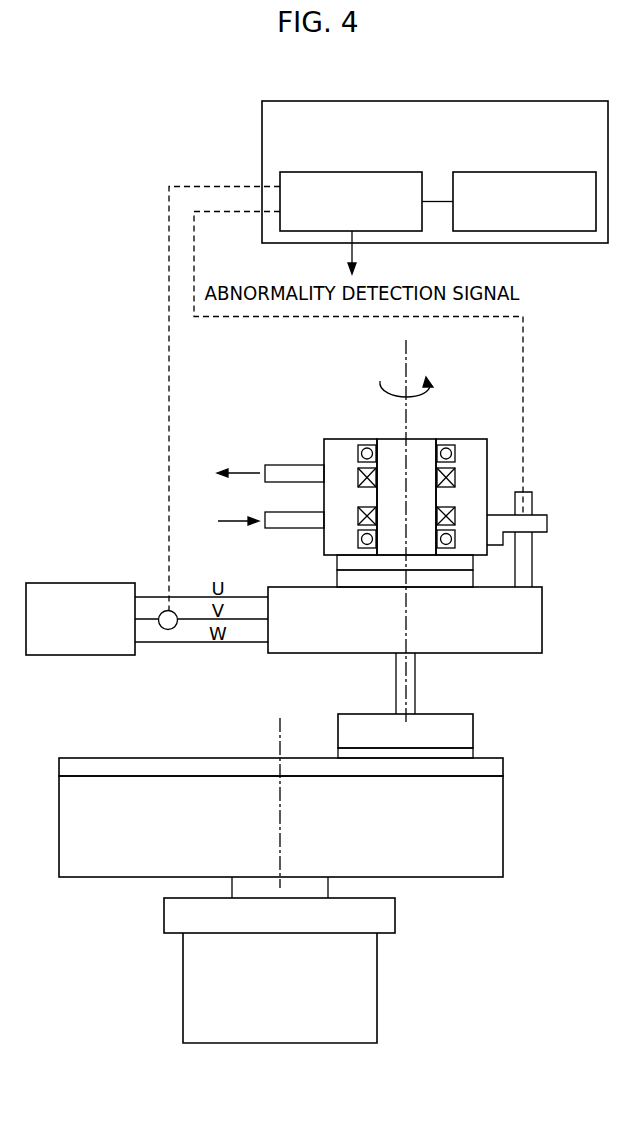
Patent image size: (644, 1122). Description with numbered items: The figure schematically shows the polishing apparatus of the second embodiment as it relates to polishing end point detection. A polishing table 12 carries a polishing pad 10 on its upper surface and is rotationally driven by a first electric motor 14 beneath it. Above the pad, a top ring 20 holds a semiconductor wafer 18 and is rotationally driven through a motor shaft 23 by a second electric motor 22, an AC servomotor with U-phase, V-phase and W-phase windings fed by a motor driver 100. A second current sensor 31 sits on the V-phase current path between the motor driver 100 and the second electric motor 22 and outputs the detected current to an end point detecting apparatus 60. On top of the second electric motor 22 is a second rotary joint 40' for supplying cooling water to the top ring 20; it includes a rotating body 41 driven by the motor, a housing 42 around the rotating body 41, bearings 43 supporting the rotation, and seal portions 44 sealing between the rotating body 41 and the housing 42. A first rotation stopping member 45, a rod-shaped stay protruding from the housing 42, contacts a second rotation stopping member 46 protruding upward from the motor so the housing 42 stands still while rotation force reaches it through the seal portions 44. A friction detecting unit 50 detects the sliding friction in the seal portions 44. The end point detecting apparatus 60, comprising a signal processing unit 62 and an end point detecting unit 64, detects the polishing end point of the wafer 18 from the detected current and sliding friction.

The end point detecting apparatus 60 is at (580, 101).
The signal processing unit 62 is at (353, 172).
The end point detecting unit 64 is at (530, 172).
The motor driver 100 is at (80, 583).
The second current sensor 31 is at (160, 613).
The second rotary joint 40' is at (353, 531).
The rotating body 41 is at (395, 463).
The housing 42 is at (473, 450).
The bearings 43 is at (357, 447).
The seal portions 44 is at (358, 513).
The first rotation stopping member 45 is at (542, 524).
The second rotation stopping member 46 is at (525, 503).
The friction detecting unit 50 is at (550, 541).
The second electric motor 22 is at (515, 653).
The motor shaft 23 is at (395, 681).
The top ring 20 is at (447, 718).
The semiconductor wafer 18 is at (463, 755).
The polishing pad 10 is at (81, 763).
The polishing table 12 is at (68, 828).
The first electric motor 14 is at (372, 1005).